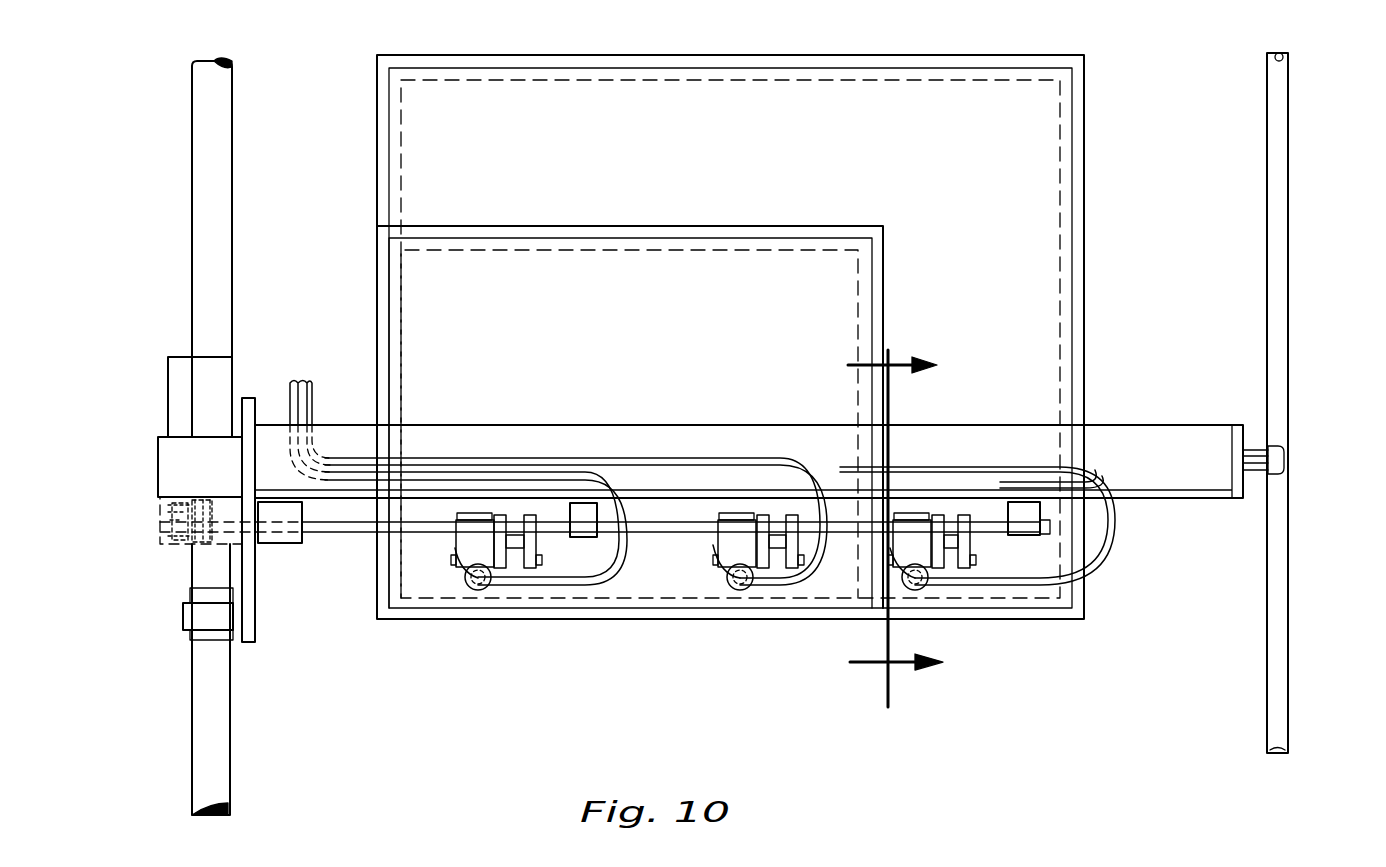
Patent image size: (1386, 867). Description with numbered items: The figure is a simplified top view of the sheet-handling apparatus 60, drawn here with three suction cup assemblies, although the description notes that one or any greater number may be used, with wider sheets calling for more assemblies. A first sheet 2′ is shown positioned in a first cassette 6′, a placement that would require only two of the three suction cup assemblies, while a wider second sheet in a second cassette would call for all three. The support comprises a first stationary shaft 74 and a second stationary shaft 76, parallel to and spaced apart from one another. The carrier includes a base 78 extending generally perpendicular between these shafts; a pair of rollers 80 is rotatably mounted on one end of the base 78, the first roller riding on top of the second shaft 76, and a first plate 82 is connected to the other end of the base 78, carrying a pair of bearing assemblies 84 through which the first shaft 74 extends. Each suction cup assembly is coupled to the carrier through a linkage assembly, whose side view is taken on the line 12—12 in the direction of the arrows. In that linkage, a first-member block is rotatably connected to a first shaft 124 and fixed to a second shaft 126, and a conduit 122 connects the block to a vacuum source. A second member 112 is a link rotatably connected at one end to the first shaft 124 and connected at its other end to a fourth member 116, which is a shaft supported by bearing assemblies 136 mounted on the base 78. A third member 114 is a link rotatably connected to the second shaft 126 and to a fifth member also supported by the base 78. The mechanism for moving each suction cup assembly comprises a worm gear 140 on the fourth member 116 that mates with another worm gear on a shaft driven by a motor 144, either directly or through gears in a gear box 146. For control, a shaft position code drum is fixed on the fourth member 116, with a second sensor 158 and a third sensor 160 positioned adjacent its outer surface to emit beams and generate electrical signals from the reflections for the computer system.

The apparatus 60 is at (448, 770).
The first stationary shaft 74 is at (196, 125).
The second stationary shaft 76 is at (1285, 137).
The base 78 is at (1104, 426).
The rollers 80 is at (1280, 447).
The first plate 82 is at (256, 578).
The bearing assemblies 84 is at (183, 616).
The first sheet 2′ is at (540, 250).
The first cassette 6′ is at (697, 227).
The section line 12— 12 is at (873, 528).
The second member 112 is at (968, 545).
The third member 114 is at (713, 547).
The fourth member 116 is at (372, 533).
The conduit 122 is at (615, 570).
The first shaft 124 is at (970, 566).
The second shaft 126 is at (709, 541).
The bearing assemblies 136 is at (297, 544).
The worm gear 140 is at (202, 544).
The motor 144 is at (168, 386).
The gear box 146 is at (166, 462).
The second sensor 158 is at (164, 505).
The third sensor 160 is at (190, 544).